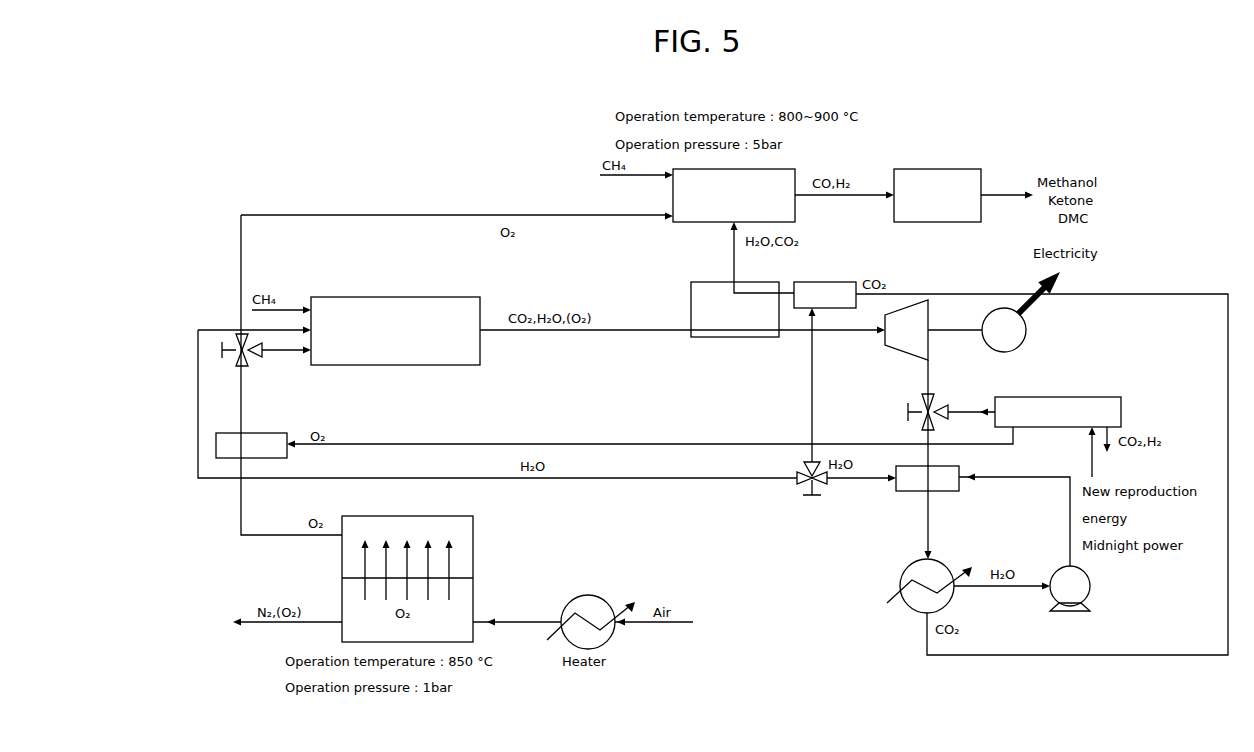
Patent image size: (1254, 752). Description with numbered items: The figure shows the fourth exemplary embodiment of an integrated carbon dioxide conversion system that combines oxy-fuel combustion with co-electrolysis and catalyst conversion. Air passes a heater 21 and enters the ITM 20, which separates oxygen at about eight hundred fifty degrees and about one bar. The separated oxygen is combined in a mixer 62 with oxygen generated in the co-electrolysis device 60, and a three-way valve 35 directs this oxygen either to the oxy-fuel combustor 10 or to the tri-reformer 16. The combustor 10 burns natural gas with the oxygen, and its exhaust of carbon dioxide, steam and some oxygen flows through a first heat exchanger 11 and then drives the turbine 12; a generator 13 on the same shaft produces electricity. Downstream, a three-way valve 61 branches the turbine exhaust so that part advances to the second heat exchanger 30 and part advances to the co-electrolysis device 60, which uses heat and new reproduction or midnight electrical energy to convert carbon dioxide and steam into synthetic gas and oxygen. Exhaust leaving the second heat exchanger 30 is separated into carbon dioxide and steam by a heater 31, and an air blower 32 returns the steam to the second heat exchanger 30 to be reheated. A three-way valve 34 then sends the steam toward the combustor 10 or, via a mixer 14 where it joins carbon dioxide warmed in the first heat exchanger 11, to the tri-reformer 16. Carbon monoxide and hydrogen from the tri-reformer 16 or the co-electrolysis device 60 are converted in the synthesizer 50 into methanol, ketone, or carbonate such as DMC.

The oxy-fuel combustor 10 is at (383, 297).
The first heat exchanger 11 is at (735, 337).
The turbine 12 is at (920, 300).
The generator 13 is at (1027, 326).
The mixer 14 is at (828, 282).
The tri-reformer 16 is at (685, 222).
The ITM 20 is at (473, 527).
The heater 21 is at (585, 595).
The second heat exchanger 30 is at (948, 491).
The heater 31 is at (905, 606).
The air blower 32 is at (1090, 590).
The 3-way valve 34 is at (800, 488).
The 3-way valve 35 is at (236, 362).
The synthesizer 50 is at (935, 169).
The co-electrolysis device 60 is at (1080, 397).
The 3-way valve 61 is at (920, 402).
The mixer 62 is at (265, 433).